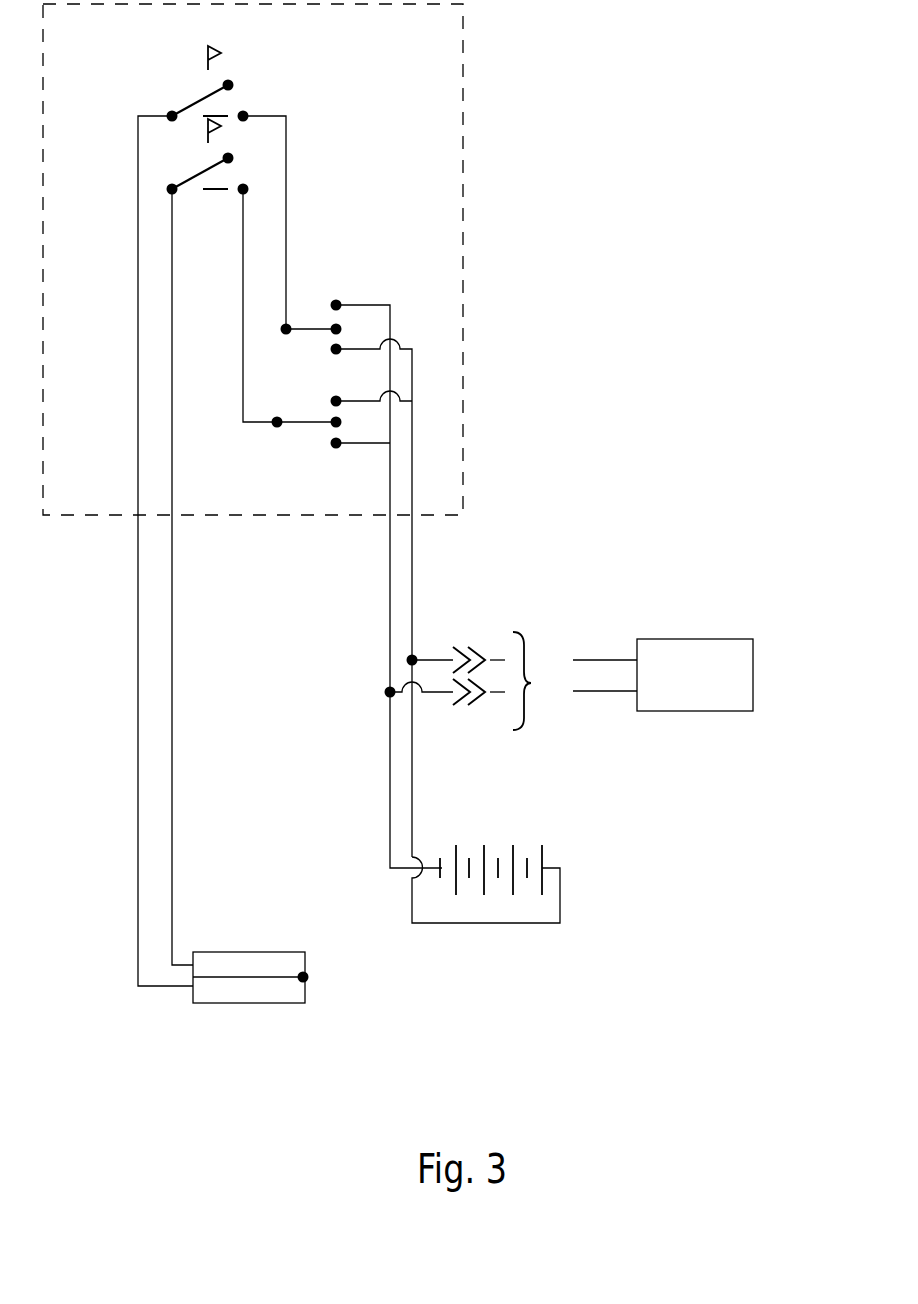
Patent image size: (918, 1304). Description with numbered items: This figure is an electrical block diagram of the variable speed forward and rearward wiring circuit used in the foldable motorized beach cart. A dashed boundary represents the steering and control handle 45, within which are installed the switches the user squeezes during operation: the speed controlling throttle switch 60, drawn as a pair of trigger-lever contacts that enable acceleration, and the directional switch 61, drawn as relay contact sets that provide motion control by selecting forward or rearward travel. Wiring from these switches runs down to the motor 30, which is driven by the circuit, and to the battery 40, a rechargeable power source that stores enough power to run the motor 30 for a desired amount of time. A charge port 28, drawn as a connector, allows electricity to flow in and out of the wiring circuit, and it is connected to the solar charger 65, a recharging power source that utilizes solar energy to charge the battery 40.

The steering and control handle 45 is at (463, 128).
The throttle switch 60 is at (297, 117).
The directional switch 61 is at (392, 340).
The charge port 28 is at (533, 685).
The solar charger 65 is at (753, 639).
The battery 40 is at (495, 845).
The motor 30 is at (227, 952).